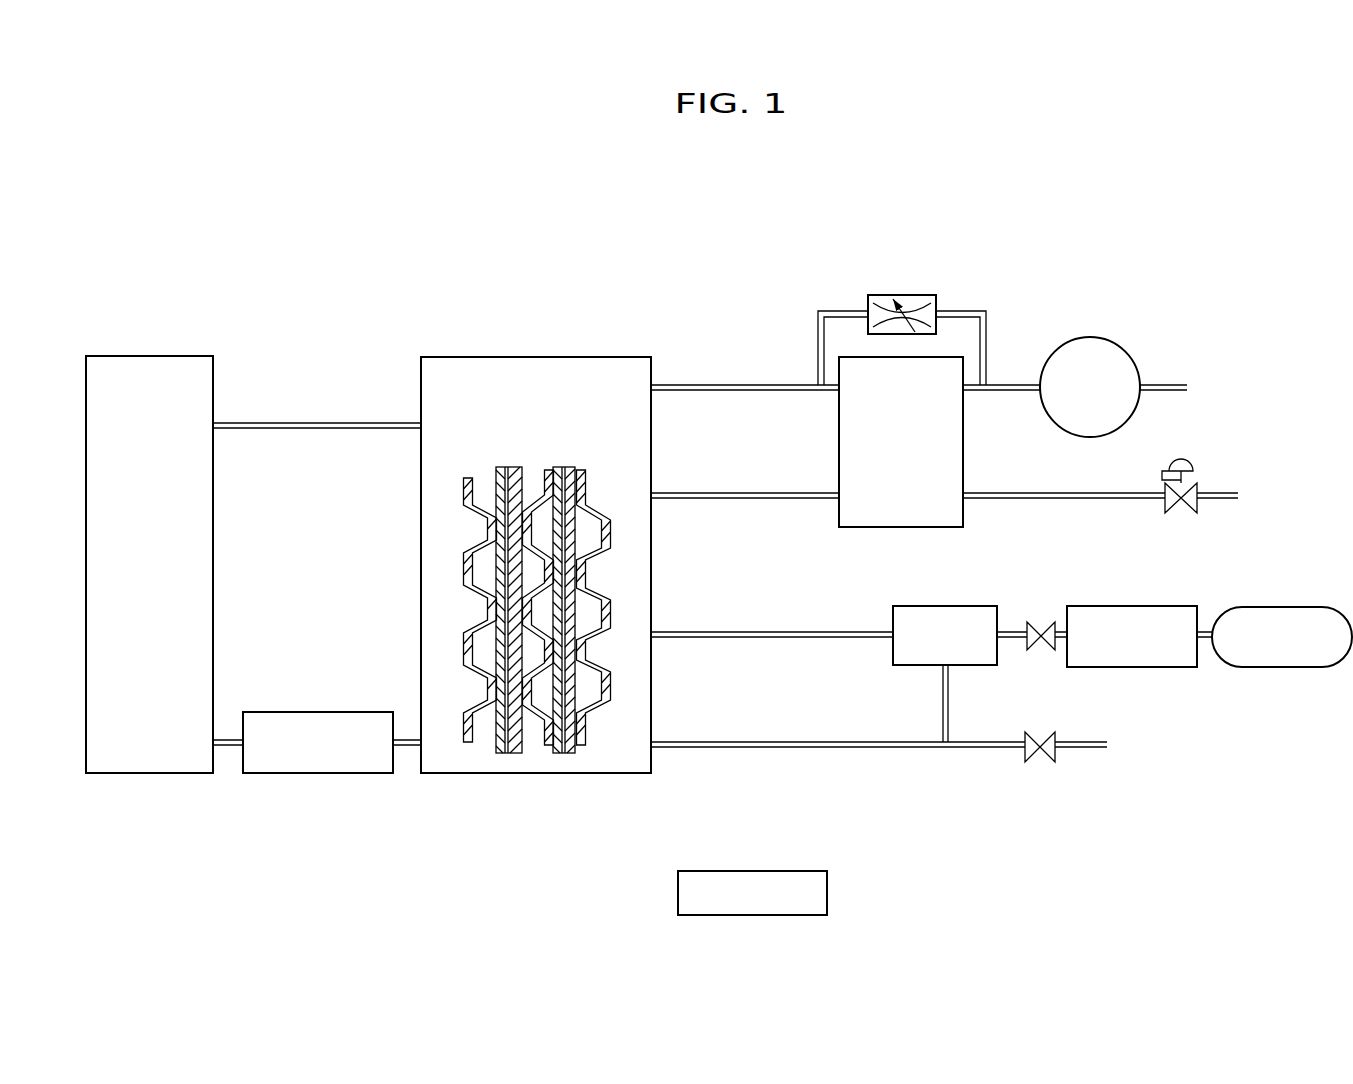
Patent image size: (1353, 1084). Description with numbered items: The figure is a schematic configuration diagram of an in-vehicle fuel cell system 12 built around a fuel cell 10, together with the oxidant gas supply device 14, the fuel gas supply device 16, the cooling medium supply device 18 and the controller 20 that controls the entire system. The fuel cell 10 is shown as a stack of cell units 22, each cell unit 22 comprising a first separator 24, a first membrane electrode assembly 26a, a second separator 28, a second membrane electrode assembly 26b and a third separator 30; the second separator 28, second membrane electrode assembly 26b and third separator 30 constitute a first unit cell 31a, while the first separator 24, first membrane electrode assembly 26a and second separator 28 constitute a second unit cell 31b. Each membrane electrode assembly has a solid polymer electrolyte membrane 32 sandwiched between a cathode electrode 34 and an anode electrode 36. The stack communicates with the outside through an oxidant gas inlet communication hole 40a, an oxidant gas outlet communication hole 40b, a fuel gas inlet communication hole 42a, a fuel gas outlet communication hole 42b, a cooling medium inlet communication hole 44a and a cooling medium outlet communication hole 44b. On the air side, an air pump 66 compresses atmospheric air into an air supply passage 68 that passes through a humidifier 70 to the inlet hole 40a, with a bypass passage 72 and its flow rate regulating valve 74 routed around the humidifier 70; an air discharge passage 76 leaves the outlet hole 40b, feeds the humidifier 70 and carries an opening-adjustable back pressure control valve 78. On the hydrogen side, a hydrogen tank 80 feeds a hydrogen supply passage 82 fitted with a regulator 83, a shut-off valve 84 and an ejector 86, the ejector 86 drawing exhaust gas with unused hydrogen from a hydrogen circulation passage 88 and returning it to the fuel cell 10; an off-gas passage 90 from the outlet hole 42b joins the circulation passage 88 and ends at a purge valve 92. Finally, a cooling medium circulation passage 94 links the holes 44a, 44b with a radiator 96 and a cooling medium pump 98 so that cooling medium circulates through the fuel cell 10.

The fuel cell 10 is at (553, 350).
The fuel cell system 12 is at (287, 297).
The oxidant gas supply device 14 is at (1025, 314).
The fuel gas supply device 16 is at (1220, 569).
The cooling medium supply device 18 is at (346, 378).
The controller 20 is at (745, 871).
The cell unit 22 is at (645, 408).
The first separator 24 is at (607, 504).
The first membrane electrode assembly 26a is at (569, 458).
The second membrane electrode assembly 26b is at (474, 643).
The second separator 28 is at (538, 488).
The third separator 30 is at (456, 490).
The first unit cell 31a is at (528, 759).
The second unit cell 31b is at (583, 759).
The solid polymer electrolyte membrane 32 is at (507, 753).
The cathode electrode 34 is at (518, 753).
The anode electrode 36 is at (497, 753).
The oxidant gas inlet communication hole 40a is at (654, 384).
The oxidant gas outlet communication hole 40b is at (654, 492).
The fuel gas inlet communication hole 42a is at (654, 631).
The fuel gas outlet communication hole 42b is at (654, 741).
The cooling medium inlet communication hole 44a is at (420, 422).
The cooling medium outlet communication hole 44b is at (419, 740).
The air pump 66 is at (1125, 350).
The air supply passage 68 is at (996, 392).
The humidifier 70 is at (872, 527).
The bypass passage 72 is at (979, 310).
The flow rate regulating valve 74 is at (910, 295).
The air discharge passage 76 is at (1005, 492).
The back pressure control valve 78 is at (1183, 458).
The hydrogen tank 80 is at (1285, 607).
The hydrogen supply passage 82 is at (1013, 630).
The regulator 83 is at (1128, 606).
The shut-off valve 84 is at (1044, 651).
The ejector 86 is at (924, 606).
The hydrogen circulation passage 88 is at (942, 707).
The off-gas passage 90 is at (976, 750).
The purge valve 92 is at (1046, 762).
The cooling medium circulation passage 94 is at (305, 430).
The radiator 96 is at (150, 356).
The cooling medium pump 98 is at (285, 712).